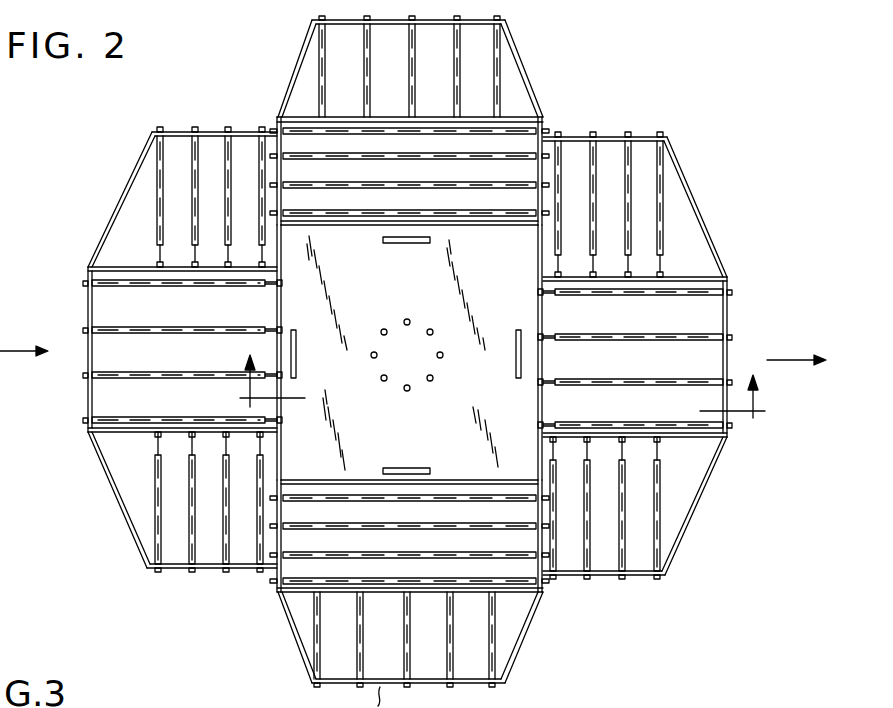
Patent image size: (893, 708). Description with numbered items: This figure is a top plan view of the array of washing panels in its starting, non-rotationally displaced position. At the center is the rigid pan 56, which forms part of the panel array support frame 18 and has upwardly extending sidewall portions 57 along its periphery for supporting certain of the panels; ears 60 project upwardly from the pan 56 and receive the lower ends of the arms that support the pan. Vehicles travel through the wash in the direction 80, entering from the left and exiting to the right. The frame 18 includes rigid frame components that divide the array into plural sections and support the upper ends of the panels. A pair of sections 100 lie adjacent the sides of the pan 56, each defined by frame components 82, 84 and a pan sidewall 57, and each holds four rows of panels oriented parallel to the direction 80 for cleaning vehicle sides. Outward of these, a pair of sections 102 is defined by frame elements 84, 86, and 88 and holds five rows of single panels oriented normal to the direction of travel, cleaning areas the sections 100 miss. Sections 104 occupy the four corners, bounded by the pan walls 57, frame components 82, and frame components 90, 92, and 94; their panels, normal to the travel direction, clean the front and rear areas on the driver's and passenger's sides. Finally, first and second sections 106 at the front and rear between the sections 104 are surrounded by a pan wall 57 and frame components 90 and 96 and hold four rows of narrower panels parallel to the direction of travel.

The panel array support frame 18 is at (530, 622).
The pan 56 is at (459, 450).
The pan sidewall portion 57 is at (537, 261).
The ear 60 is at (406, 243).
The direction of vehicular travel 80 is at (12, 348).
The frame component 82 is at (282, 170).
The frame component 84 is at (480, 116).
The frame element 86 is at (435, 27).
The frame element 88 is at (292, 70).
The frame component 90 is at (128, 267).
The frame component 92 is at (180, 130).
The frame component 94 is at (125, 180).
The frame component 96 is at (85, 394).
The section 100 is at (423, 184).
The section 102 is at (405, 78).
The section 104 is at (236, 205).
The section 106 is at (198, 358).